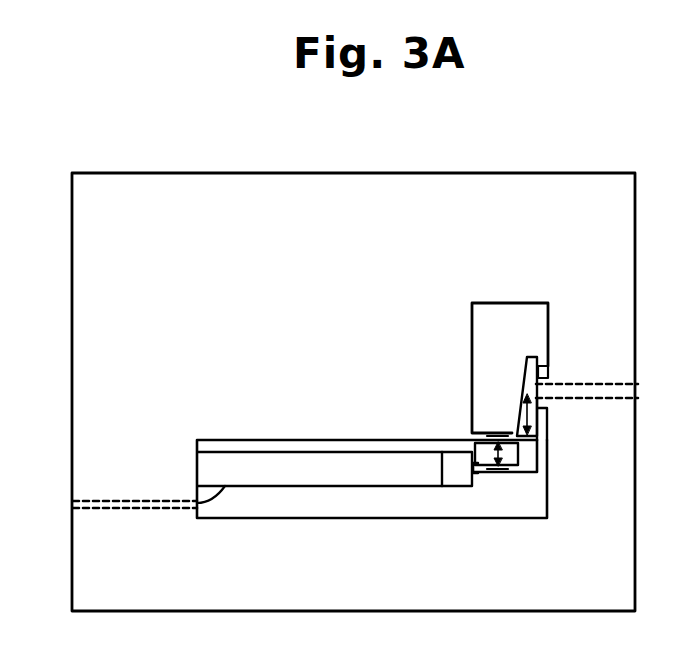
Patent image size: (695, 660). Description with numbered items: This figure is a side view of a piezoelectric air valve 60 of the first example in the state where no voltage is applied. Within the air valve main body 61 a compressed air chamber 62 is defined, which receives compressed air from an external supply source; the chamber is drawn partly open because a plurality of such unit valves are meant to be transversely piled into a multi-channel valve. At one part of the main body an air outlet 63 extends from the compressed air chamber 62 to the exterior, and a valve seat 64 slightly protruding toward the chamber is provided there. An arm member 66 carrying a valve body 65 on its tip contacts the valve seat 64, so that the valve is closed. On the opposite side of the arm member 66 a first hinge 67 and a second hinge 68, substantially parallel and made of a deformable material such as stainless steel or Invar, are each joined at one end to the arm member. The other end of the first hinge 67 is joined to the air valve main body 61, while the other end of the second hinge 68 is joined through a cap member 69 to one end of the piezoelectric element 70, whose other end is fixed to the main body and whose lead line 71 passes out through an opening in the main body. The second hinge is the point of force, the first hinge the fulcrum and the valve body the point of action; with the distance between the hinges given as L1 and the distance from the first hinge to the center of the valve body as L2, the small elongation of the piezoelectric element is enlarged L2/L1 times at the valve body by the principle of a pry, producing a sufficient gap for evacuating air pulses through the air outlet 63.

The piezoelectric air valve 60 is at (548, 143).
The air valve main body 61 is at (120, 188).
The compressed air chamber 62 is at (505, 312).
The air outlet 63 is at (623, 384).
The valve seat 64 is at (549, 368).
The valve body 65 is at (548, 408).
The arm member 66 is at (525, 360).
The first hinge 67 is at (484, 432).
The second hinge 68 is at (493, 478).
The cap member 69 is at (460, 486).
The piezoelectric element 70 is at (330, 472).
The lead line 71 is at (73, 503).
The distance between second hinge and first hinge L1 is at (478, 441).
The distance between first hinge and center of valve body L2 is at (540, 412).